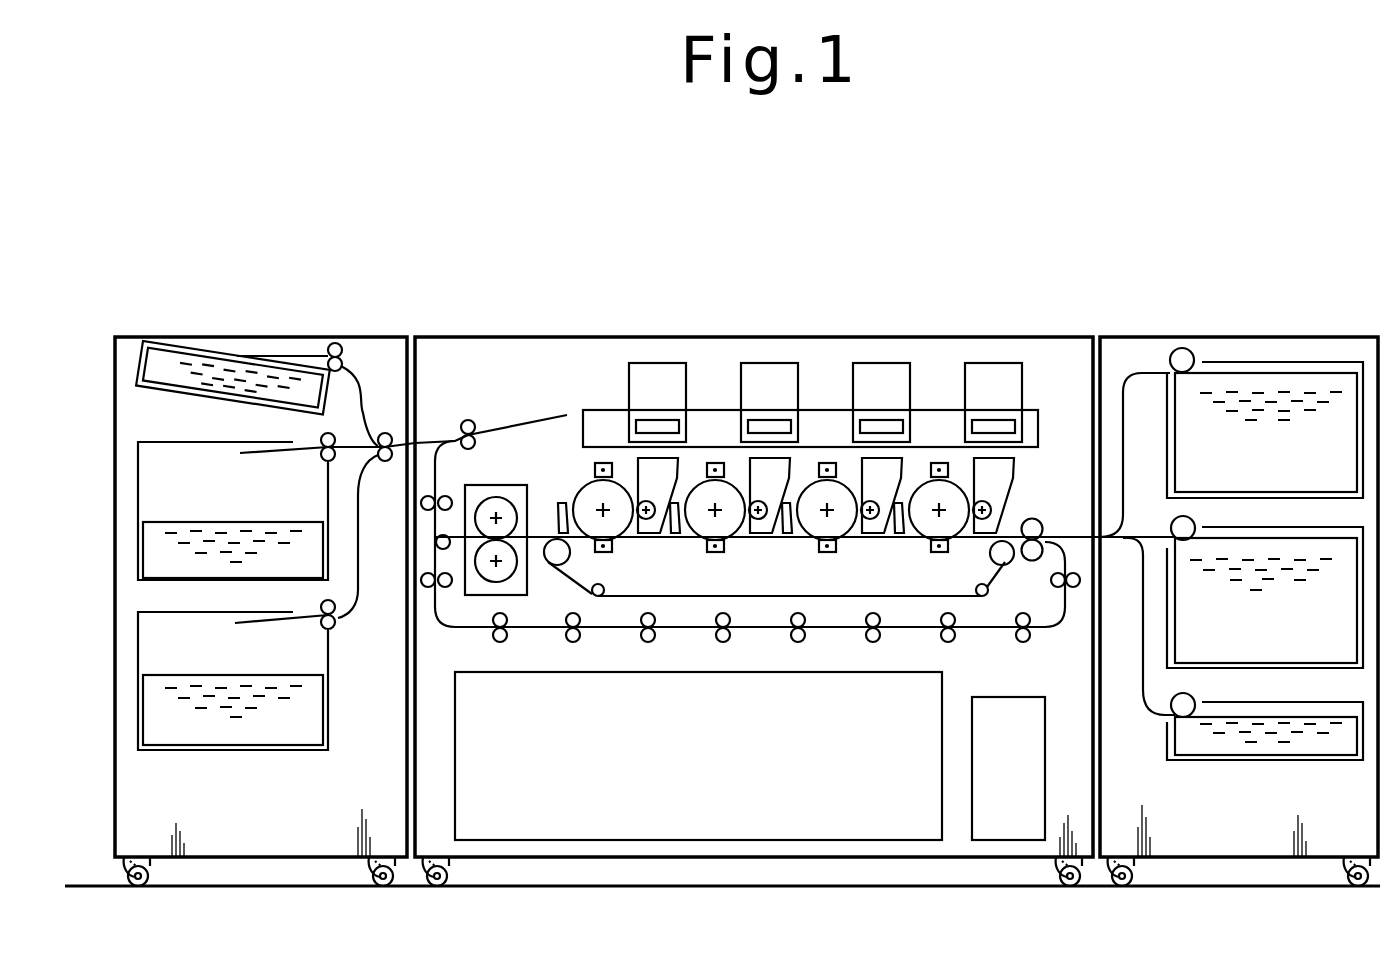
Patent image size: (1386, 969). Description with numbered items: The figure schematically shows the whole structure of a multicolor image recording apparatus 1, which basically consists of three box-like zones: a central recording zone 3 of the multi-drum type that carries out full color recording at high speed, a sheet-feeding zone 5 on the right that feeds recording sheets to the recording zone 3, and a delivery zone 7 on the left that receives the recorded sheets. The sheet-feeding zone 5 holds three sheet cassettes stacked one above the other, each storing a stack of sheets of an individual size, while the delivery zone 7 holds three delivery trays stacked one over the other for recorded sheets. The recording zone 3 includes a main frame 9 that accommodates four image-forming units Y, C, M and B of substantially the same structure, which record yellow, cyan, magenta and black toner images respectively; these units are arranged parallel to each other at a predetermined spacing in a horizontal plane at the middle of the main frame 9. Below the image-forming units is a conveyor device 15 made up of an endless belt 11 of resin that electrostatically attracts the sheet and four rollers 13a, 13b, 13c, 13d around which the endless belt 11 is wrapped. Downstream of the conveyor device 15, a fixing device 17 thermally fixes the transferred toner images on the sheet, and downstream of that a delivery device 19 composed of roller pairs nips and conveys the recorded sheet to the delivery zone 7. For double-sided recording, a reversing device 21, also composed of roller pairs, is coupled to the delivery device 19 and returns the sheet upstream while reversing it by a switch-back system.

The image recording apparatus 1 is at (397, 257).
The recording zone 3 is at (847, 318).
The sheet-feeding zone 5 is at (1148, 313).
The delivery zone 7 is at (393, 315).
The main frame 9 is at (932, 334).
The endless belt 11 is at (897, 540).
The roller 13a is at (1007, 560).
The roller 13b is at (553, 564).
The roller 13c is at (604, 586).
The roller 13d is at (976, 588).
The conveyor device 15 is at (867, 552).
The fixing device 17 is at (508, 485).
The delivery device 19 is at (489, 406).
The reversing device 21 is at (464, 644).
The image-forming unit B is at (627, 468).
The image-forming unit M is at (737, 468).
The image-forming unit C is at (847, 466).
The image-forming unit Y is at (958, 466).